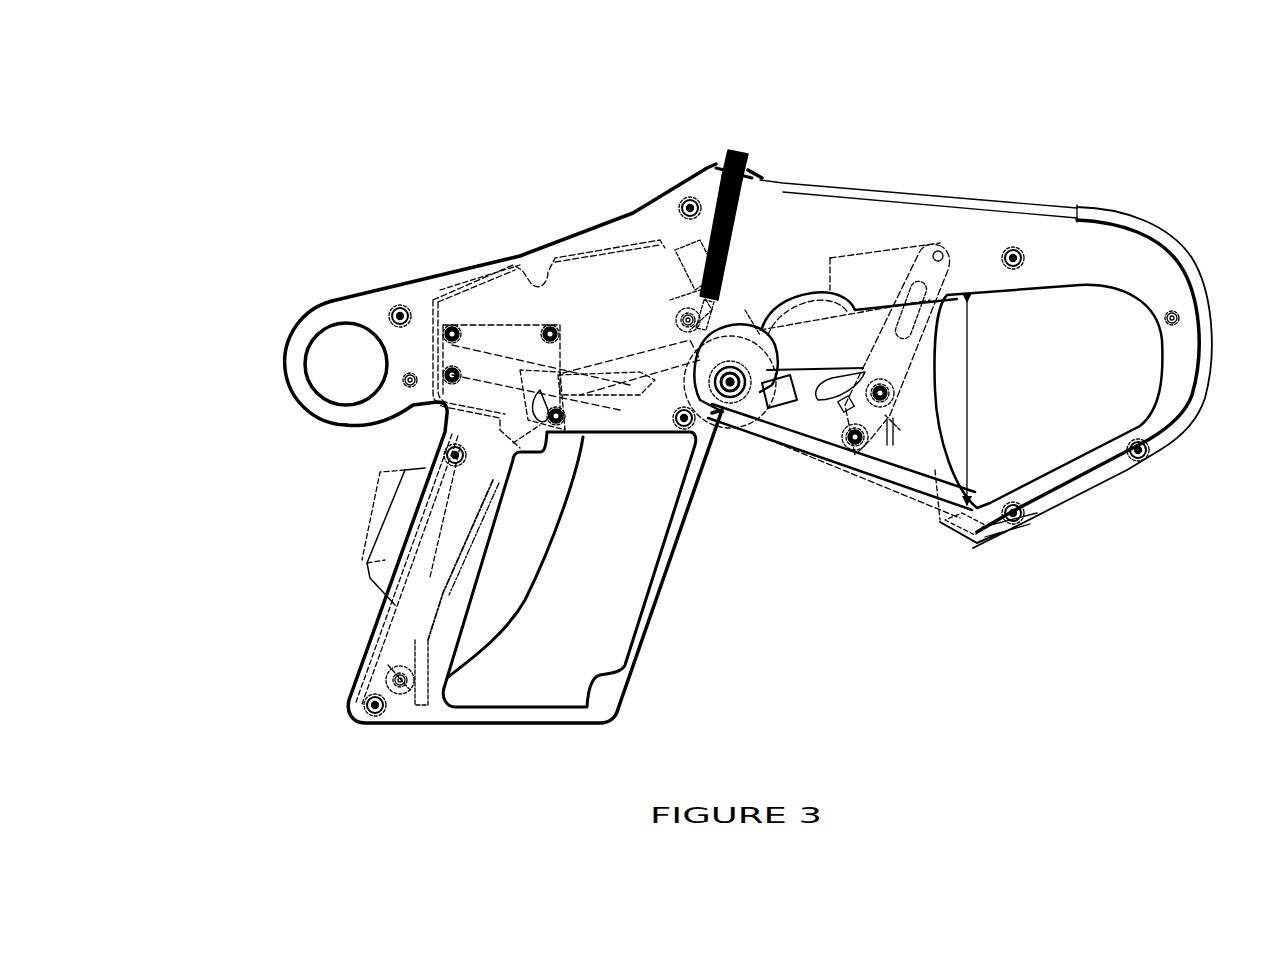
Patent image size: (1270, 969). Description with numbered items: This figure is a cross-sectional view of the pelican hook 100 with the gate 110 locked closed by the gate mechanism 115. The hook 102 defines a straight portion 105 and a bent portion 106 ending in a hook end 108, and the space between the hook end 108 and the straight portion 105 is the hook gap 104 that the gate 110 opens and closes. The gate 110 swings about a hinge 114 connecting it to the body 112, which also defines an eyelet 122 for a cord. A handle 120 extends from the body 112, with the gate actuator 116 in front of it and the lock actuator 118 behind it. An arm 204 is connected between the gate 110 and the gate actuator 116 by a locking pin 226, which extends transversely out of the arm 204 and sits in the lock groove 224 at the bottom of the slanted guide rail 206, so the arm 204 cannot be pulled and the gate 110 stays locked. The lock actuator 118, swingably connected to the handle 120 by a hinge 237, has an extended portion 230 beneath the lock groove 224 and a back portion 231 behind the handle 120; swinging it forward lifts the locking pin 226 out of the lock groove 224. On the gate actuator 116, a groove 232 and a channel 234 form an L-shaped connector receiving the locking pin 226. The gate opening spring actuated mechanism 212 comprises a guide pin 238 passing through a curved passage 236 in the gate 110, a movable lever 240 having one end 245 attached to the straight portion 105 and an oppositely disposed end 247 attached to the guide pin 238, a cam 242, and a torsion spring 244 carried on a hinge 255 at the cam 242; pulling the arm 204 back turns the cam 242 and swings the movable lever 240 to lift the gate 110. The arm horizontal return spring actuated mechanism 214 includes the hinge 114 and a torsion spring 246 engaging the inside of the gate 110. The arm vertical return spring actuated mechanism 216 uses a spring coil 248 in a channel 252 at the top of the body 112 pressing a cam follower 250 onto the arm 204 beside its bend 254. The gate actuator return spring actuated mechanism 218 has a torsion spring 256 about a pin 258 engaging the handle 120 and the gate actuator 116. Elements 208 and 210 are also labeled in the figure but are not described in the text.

The pelican hook 100 is at (566, 153).
The hook 102 is at (1175, 262).
The hook gap 104 is at (968, 385).
The straight portion 105 is at (895, 215).
The bent portion 106 is at (1102, 462).
The hook end 108 is at (985, 540).
The gate 110 is at (942, 470).
The body 112 is at (472, 288).
The hinge 114 is at (742, 342).
The gate mechanism 115 is at (628, 283).
The gate actuator 116 is at (492, 593).
The lock actuator 118 is at (400, 530).
The handle 120 is at (385, 660).
The eyelet 122 is at (330, 333).
The arm 204 is at (647, 343).
The guide rail 206 is at (482, 390).
The bracket 208 is at (520, 326).
The cable 210 is at (563, 357).
The gate opening spring actuated mechanism 212 is at (862, 465).
The arm horizontal return spring actuated mechanism 214 is at (743, 423).
The arm vertical return spring actuated mechanism 216 is at (738, 146).
The gate actuator return spring actuated mechanism 218 is at (410, 703).
The lock groove 224 is at (553, 433).
The locking pin 226 is at (540, 410).
The extended portion 230 is at (510, 447).
The back portion 231 is at (380, 557).
The groove 232 is at (540, 388).
The channel 234 is at (590, 380).
The passage 236 is at (752, 378).
The hinge 237 is at (450, 450).
The guide pin 238 is at (845, 360).
The movable lever 240 is at (962, 275).
The cam 242 is at (891, 427).
The torsion spring 244 is at (847, 415).
The end of movable lever 245 is at (935, 255).
The torsion spring 246 is at (752, 328).
The oppositely disposed end of movable lever 247 is at (884, 400).
The spring coil 248 is at (707, 168).
The cam follower 250 is at (692, 297).
The channel 252 is at (690, 215).
The bend 254 is at (687, 320).
The hinge 255 is at (850, 420).
The torsion spring 256 is at (423, 647).
The pin 258 is at (393, 673).